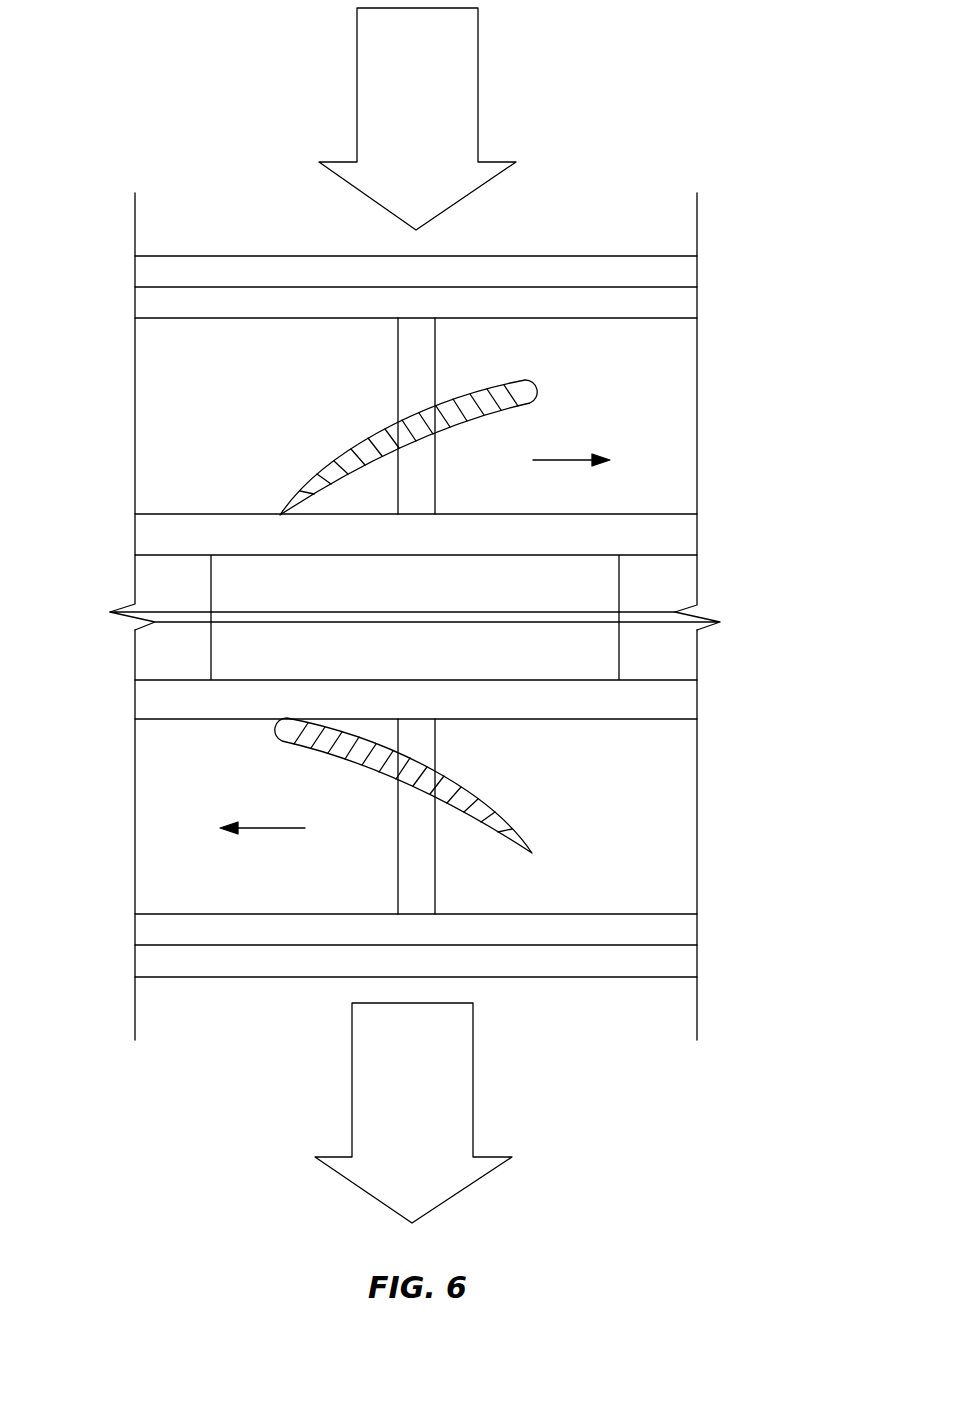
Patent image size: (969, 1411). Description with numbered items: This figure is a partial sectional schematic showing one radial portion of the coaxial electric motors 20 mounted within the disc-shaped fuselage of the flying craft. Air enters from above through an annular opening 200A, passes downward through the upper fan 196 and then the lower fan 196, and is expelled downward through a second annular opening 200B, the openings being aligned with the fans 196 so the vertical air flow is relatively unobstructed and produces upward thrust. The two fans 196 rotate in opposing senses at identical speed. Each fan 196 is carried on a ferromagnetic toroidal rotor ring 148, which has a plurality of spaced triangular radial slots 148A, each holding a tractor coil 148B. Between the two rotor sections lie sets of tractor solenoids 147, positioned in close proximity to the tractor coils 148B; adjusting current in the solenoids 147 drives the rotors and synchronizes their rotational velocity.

The coaxial electric motor 20 is at (122, 422).
The tractor solenoid set 147 is at (583, 594).
The ferromagnetic toroidal rotor ring 148 is at (157, 357).
The triangular radial slot 148A is at (398, 365).
The tractor coil 148B is at (422, 334).
The fan 196 is at (330, 455).
The annular opening 200A is at (547, 232).
The second annular opening 200B is at (540, 1003).